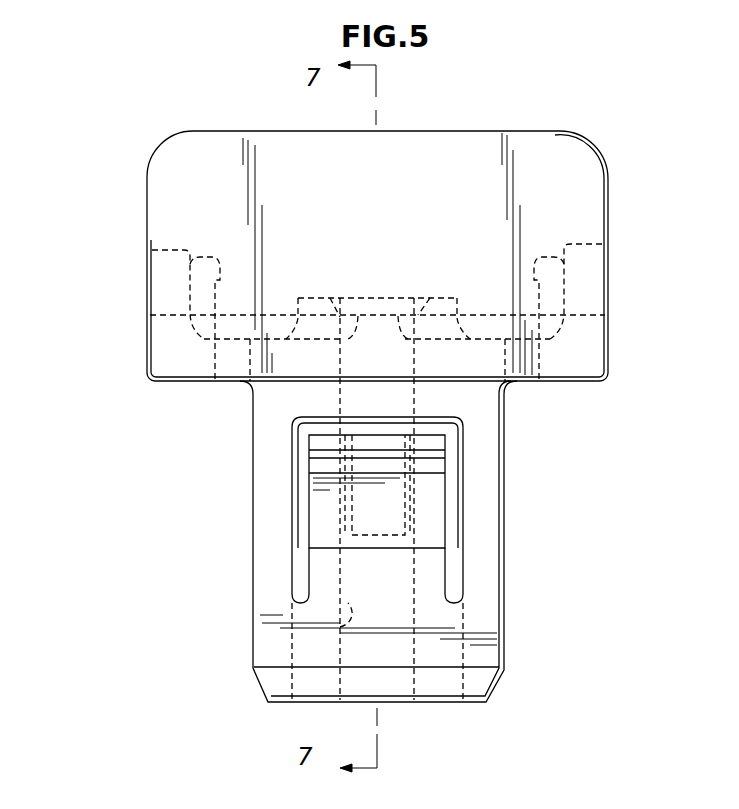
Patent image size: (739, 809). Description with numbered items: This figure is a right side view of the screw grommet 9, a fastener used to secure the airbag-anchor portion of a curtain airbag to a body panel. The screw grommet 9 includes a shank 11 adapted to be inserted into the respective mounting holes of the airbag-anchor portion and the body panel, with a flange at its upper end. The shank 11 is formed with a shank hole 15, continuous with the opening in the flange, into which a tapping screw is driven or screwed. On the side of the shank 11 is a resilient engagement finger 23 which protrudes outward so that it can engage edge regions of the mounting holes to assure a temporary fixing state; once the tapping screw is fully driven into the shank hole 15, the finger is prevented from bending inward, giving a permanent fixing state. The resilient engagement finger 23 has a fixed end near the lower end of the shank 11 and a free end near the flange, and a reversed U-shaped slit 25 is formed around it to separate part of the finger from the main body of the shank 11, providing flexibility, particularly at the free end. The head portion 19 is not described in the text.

The screw grommet 9 is at (140, 156).
The head portion 19 is at (605, 153).
The shank 11 is at (252, 595).
The shank hole 15 is at (340, 626).
The resilient engagement finger 23 is at (445, 477).
The reversed U-shaped slit 25 is at (303, 523).